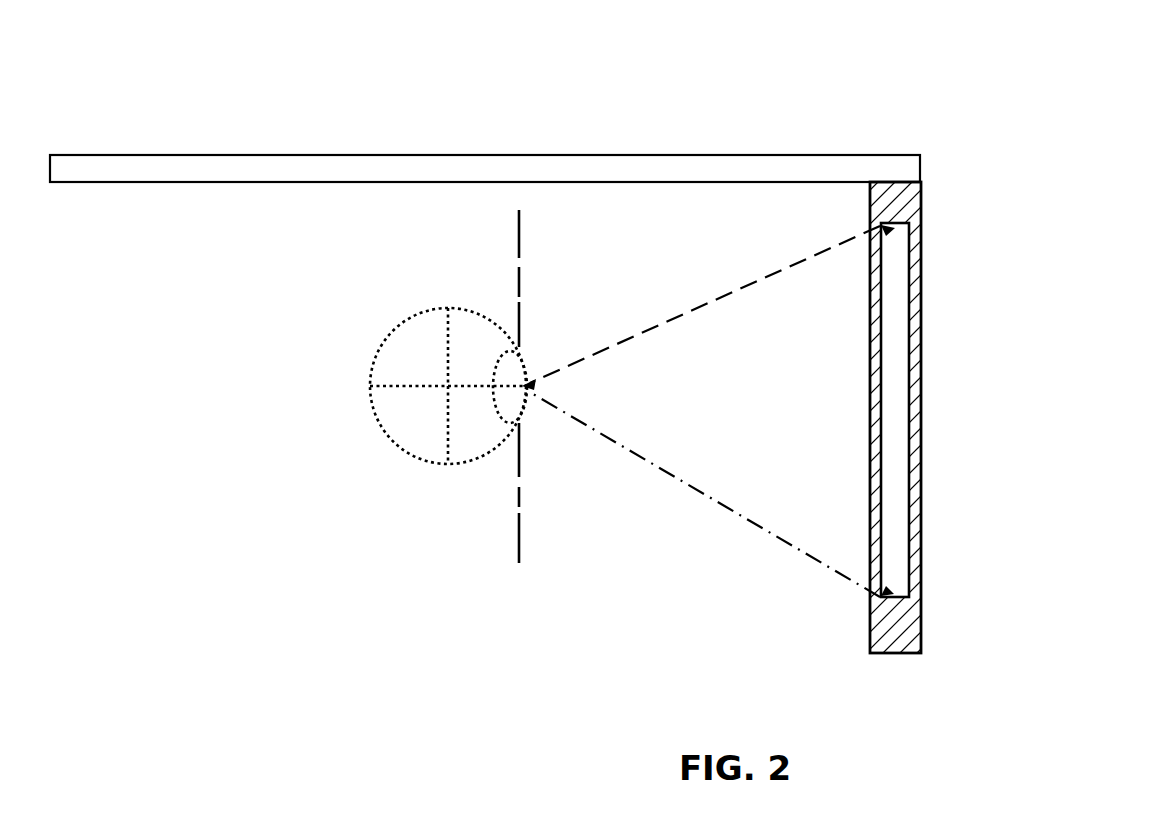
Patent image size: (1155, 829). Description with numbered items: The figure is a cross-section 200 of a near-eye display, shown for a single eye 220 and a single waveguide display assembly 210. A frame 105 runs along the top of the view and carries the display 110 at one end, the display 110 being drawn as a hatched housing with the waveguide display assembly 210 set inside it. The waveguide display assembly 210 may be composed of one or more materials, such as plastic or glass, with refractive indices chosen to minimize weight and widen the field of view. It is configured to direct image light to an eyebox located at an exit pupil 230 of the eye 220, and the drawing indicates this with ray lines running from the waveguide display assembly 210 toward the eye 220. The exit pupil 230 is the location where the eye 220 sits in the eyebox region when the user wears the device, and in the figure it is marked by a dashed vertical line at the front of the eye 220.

The cross-section 200 is at (229, 57).
The frame 105 is at (714, 155).
The display 110 is at (919, 538).
The waveguide display assembly 210 is at (893, 412).
The eye 220 is at (371, 386).
The exit pupil 230 is at (516, 488).